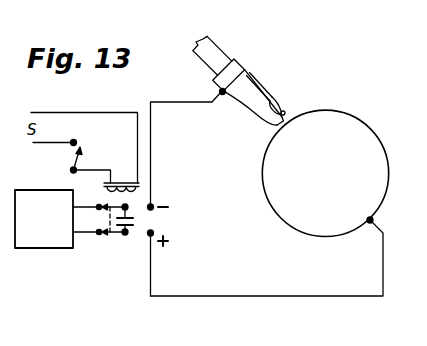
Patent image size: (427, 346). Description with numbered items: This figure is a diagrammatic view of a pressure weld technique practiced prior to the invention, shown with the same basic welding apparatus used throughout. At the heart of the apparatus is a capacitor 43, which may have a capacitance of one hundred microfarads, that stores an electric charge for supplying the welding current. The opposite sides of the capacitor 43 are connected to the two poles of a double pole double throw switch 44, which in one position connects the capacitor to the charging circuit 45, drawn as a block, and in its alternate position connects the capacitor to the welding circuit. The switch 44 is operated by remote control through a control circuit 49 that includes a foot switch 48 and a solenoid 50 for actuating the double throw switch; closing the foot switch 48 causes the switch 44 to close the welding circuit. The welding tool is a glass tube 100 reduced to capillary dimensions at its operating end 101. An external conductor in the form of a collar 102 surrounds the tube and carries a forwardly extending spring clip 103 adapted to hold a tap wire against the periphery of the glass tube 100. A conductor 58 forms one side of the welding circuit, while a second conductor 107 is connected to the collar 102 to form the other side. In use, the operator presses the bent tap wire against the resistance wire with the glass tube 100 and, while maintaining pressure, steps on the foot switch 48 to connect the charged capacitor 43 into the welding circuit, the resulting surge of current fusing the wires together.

The capacitor 43 is at (134, 233).
The double pole double throw switch 44 is at (111, 244).
The charging circuit 45 is at (37, 249).
The foot switch 48 is at (71, 169).
The control circuit 49 is at (102, 88).
The solenoid 50 is at (117, 182).
The conductor 58 is at (230, 297).
The glass tube 100 is at (242, 76).
The operating end 101 is at (267, 121).
The collar 102 is at (220, 76).
The spring clip 103 is at (268, 96).
The second conductor 107 is at (152, 160).